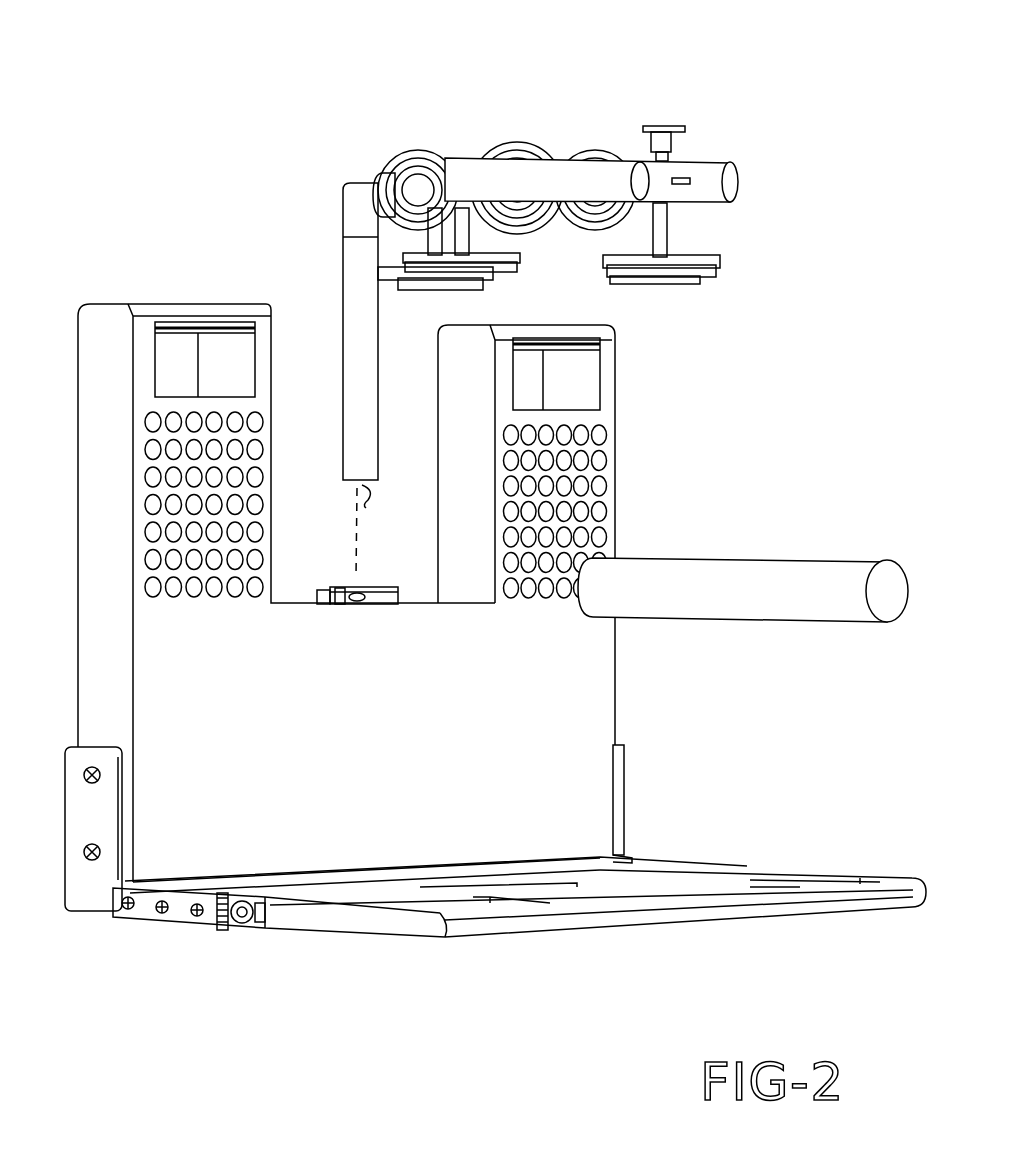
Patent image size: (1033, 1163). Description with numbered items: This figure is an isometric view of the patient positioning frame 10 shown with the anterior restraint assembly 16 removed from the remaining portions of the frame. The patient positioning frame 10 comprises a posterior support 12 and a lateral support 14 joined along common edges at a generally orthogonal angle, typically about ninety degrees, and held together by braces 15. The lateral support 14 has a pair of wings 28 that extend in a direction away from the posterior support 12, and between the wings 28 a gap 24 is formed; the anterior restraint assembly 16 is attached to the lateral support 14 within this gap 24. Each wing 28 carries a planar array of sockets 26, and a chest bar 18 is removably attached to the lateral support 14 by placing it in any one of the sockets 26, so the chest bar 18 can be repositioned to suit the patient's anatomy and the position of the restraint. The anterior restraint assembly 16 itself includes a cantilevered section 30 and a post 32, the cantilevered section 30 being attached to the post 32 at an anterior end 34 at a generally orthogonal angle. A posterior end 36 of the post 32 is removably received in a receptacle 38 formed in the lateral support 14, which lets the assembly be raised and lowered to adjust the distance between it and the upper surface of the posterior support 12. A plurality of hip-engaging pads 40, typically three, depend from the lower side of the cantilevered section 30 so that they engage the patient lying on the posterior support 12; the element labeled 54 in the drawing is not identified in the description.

The patient positioning frame 10 is at (212, 60).
The posterior support 12 is at (375, 922).
The lateral support 14 is at (400, 741).
The braces 15 is at (97, 902).
The anterior restraint assembly 16 is at (736, 111).
The chest bar 18 is at (727, 562).
The gap 24 is at (315, 325).
The sockets 26 is at (253, 583).
The wings 28 is at (90, 447).
The cantilevered section 30 is at (344, 123).
The post 32 is at (345, 263).
The anterior end 34 is at (326, 177).
The posterior end 36 is at (390, 531).
The receptacle 38 is at (341, 585).
The hip-engaging pads 40 is at (480, 285).
The posts 54 is at (447, 235).